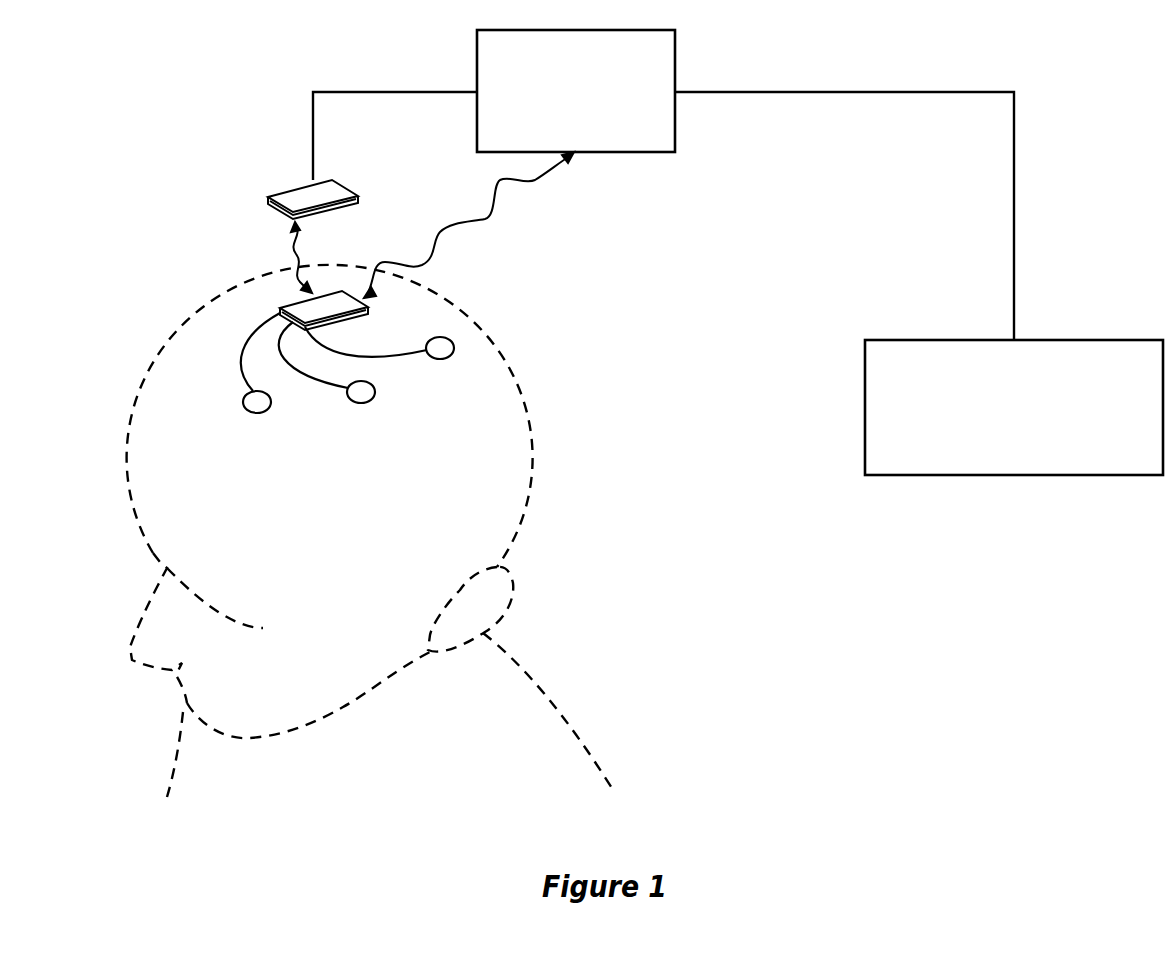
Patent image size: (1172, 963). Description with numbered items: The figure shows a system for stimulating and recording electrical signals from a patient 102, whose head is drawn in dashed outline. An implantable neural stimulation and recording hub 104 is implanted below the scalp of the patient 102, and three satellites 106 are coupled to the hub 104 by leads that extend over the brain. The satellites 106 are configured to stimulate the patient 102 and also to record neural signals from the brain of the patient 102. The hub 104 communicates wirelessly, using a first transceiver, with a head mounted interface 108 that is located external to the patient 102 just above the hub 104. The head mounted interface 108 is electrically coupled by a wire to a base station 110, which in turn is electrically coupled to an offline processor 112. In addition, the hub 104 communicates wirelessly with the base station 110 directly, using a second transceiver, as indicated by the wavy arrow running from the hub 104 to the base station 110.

The patient 102 is at (178, 757).
The implantable neural stimulation and recording hub 104 is at (280, 308).
The satellites 106 is at (453, 345).
The head mounted interface 108 is at (268, 198).
The base station 110 is at (576, 91).
The offline processor 112 is at (1014, 407).